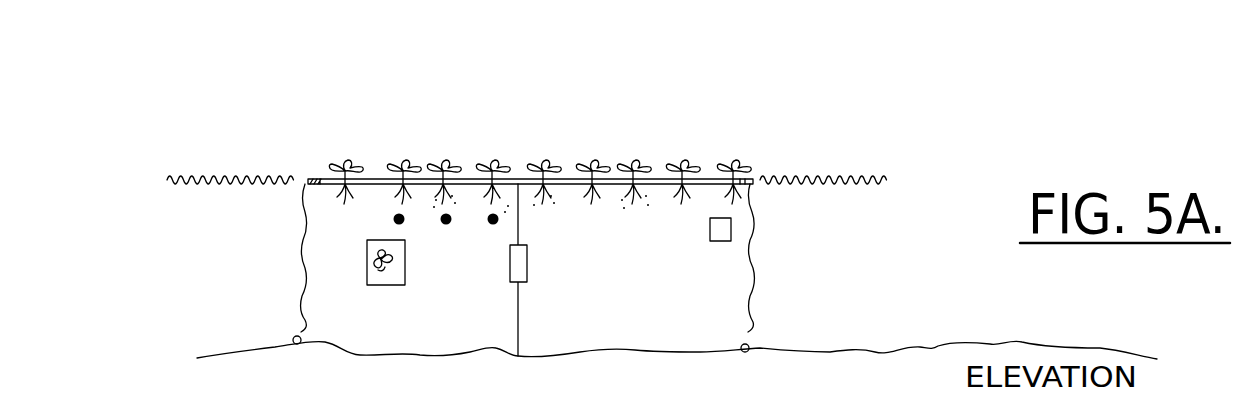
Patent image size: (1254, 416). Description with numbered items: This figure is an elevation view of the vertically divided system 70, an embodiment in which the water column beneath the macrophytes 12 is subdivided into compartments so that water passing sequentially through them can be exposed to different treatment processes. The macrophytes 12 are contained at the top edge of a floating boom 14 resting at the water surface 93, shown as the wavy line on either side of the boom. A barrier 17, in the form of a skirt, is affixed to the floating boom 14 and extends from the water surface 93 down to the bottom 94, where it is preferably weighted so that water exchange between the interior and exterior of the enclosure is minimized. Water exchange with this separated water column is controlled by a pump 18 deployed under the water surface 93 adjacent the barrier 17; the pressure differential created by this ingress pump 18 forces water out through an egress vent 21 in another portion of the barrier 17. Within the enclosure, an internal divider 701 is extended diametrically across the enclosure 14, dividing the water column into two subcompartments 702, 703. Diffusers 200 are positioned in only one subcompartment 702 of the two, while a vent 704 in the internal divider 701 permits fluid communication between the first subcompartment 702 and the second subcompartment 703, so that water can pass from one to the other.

The vertically divided system 70 is at (191, 108).
The water surface 93 is at (834, 170).
The floating boom 14 is at (307, 177).
The macrophytes 12 is at (396, 154).
The barrier 17 is at (753, 230).
The egress vent 21 is at (731, 236).
The pump 18 is at (365, 258).
The diffusers 200 is at (492, 231).
The internal divider 701 is at (521, 311).
The vent 704 is at (528, 262).
The bottom 94 is at (932, 343).
The first subcompartment 702 is at (410, 330).
The second subcompartment 703 is at (641, 330).